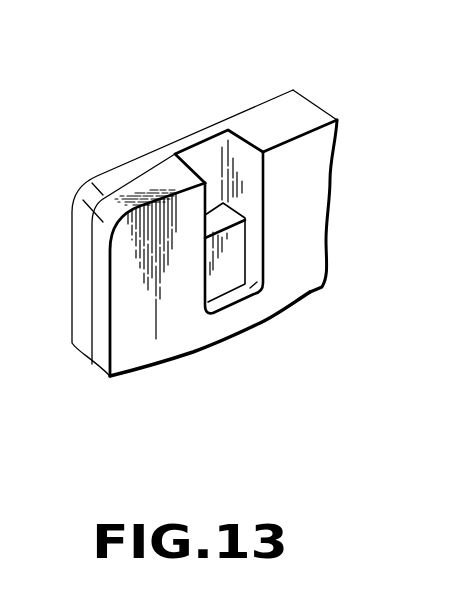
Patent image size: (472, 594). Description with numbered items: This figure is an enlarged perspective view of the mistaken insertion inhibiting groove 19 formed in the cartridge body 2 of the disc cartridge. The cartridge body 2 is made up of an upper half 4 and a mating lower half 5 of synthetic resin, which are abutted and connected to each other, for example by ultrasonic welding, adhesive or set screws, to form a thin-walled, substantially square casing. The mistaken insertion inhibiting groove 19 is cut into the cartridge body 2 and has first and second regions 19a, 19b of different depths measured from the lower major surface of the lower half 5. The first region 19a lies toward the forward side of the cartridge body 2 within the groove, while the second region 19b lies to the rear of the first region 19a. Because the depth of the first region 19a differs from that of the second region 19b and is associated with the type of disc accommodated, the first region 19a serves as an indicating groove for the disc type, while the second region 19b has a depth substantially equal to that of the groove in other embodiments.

The cartridge body 2 is at (78, 158).
The upper half 4 is at (302, 106).
The lower half 5 is at (313, 121).
The mistaken insertion inhibiting groove 19 is at (260, 178).
The first region 19a is at (200, 157).
The second region 19b is at (235, 258).